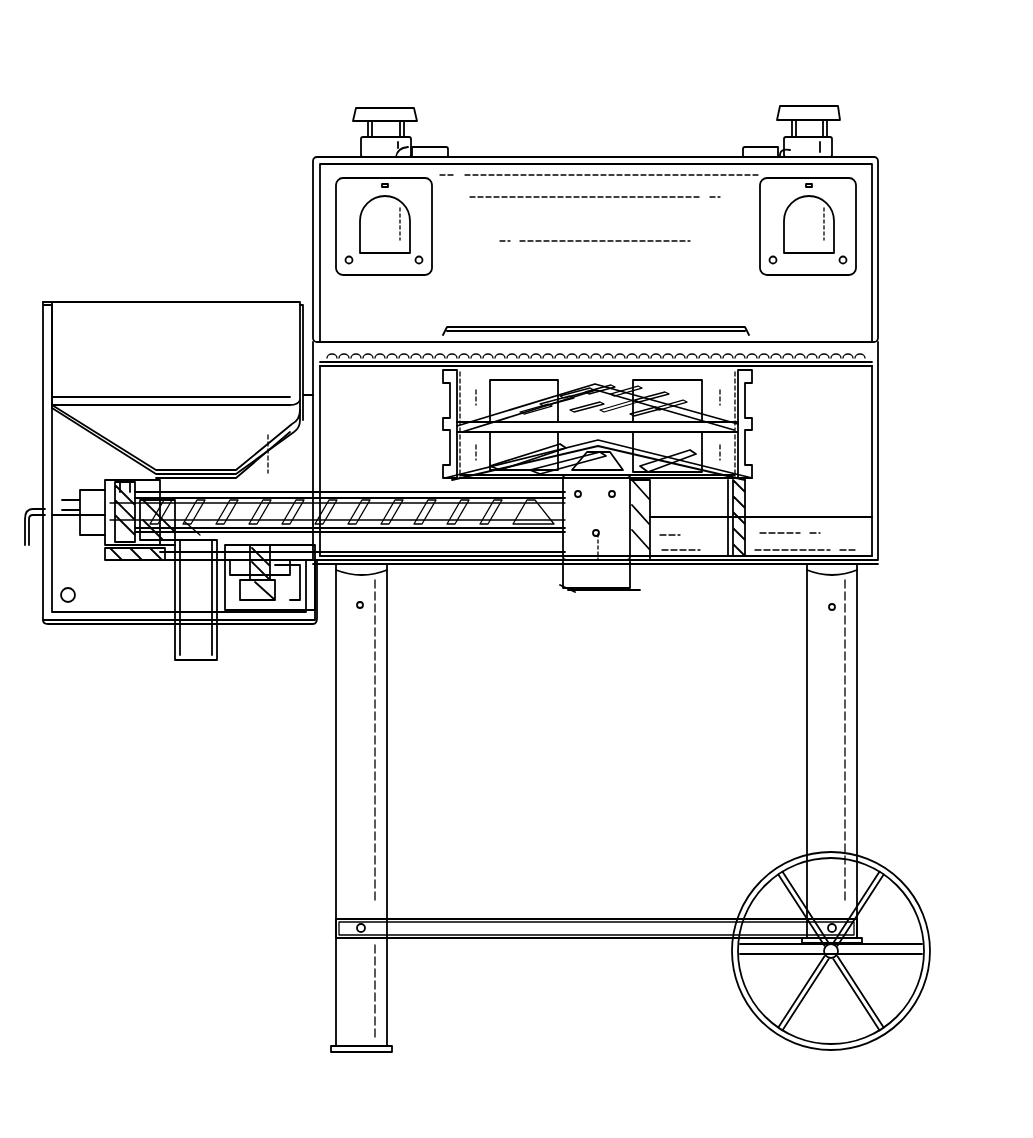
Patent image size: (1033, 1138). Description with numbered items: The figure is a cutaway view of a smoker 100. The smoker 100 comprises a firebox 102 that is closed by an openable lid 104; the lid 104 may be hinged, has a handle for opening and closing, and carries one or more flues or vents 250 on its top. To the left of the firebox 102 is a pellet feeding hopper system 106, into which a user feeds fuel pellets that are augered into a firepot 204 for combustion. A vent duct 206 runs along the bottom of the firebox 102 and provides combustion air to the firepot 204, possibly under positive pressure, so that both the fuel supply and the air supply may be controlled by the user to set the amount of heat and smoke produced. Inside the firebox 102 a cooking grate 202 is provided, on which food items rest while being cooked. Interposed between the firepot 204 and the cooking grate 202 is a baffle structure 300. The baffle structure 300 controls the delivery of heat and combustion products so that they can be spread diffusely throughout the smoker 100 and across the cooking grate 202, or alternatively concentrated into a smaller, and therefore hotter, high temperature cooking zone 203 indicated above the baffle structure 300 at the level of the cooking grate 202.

The smoker 100 is at (757, 73).
The firebox 102 is at (862, 448).
The openable lid 104 is at (880, 240).
The pellet feeding hopper system 106 is at (152, 637).
The cooking grate 202 is at (390, 368).
The high temperature cooking zone 203 is at (602, 326).
The firepot 204 is at (640, 540).
The vent duct 206 is at (487, 545).
The flues or vents 250 is at (393, 108).
The baffle structure 300 is at (760, 408).